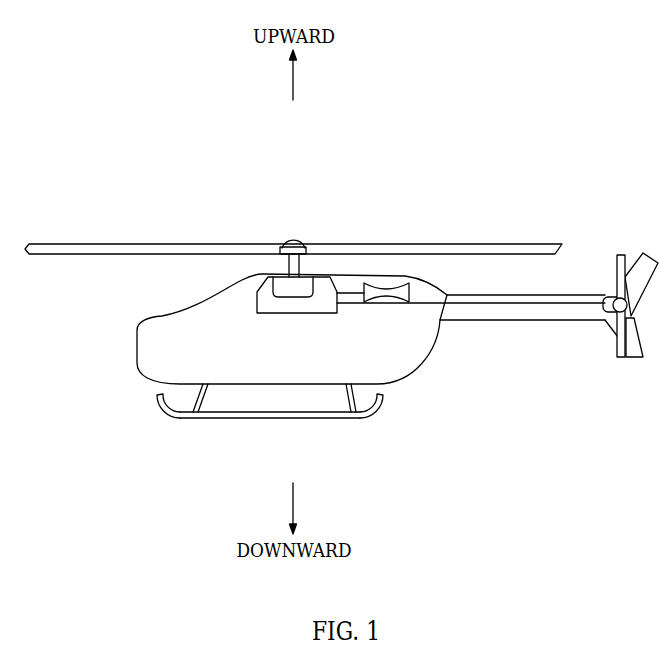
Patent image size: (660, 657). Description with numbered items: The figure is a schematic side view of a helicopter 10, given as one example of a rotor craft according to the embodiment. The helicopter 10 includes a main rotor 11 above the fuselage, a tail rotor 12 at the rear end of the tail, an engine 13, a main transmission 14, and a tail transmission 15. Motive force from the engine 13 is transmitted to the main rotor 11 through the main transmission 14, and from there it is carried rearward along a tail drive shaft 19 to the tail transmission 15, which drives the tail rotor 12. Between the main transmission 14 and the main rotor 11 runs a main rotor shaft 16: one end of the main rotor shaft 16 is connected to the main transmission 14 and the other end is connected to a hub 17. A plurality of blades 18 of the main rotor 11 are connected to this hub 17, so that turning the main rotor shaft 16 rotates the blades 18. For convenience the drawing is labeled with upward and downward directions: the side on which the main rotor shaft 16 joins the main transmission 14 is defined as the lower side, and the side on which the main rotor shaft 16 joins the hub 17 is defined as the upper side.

The helicopter 10 is at (128, 178).
The main rotor 11 is at (426, 181).
The tail rotor 12 is at (617, 347).
The engine 13 is at (400, 284).
The main transmission 14 is at (264, 300).
The tail transmission 15 is at (615, 288).
The main rotor shaft 16 is at (288, 263).
The hub 17 is at (292, 240).
The blades 18 is at (360, 251).
The tail drive shaft 19 is at (485, 308).